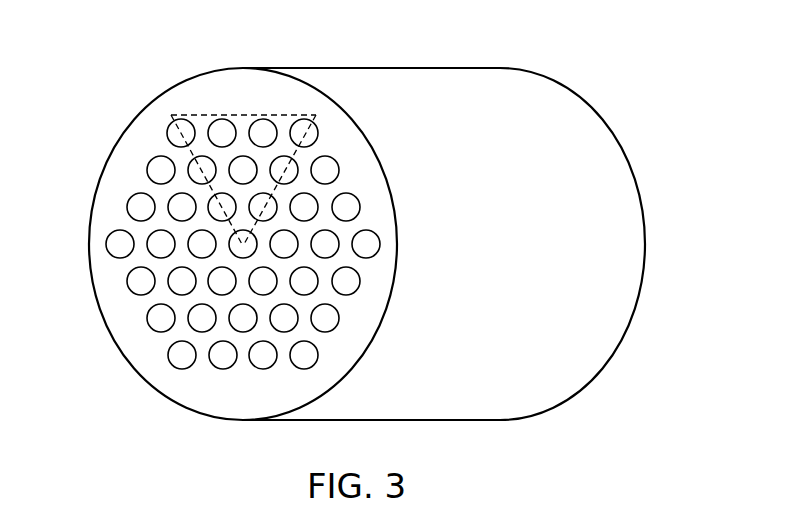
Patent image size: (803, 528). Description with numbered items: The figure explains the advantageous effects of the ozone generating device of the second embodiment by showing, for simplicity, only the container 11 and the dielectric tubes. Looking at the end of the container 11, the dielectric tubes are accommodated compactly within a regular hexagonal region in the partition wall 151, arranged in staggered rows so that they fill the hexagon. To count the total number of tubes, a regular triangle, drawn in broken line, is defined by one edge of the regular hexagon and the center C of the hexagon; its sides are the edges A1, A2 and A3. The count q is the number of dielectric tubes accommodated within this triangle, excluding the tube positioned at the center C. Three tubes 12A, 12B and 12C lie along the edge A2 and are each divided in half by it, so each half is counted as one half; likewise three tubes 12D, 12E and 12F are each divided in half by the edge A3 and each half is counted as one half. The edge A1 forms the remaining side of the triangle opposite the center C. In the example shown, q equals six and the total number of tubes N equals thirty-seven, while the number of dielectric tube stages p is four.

The container 11 is at (475, 67).
The partition wall 151 is at (198, 88).
The dielectric tube 12A is at (169, 127).
The dielectric tube 12B is at (189, 172).
The dielectric tube 12C is at (210, 214).
The dielectric tube 12D is at (316, 123).
The dielectric tube 12E is at (298, 170).
The dielectric tube 12F is at (278, 207).
The edge of the triangle A1 is at (240, 114).
The edge of the triangle A2 is at (175, 153).
The edge of the triangle A3 is at (320, 150).
The center of the regular hexagon C is at (231, 250).